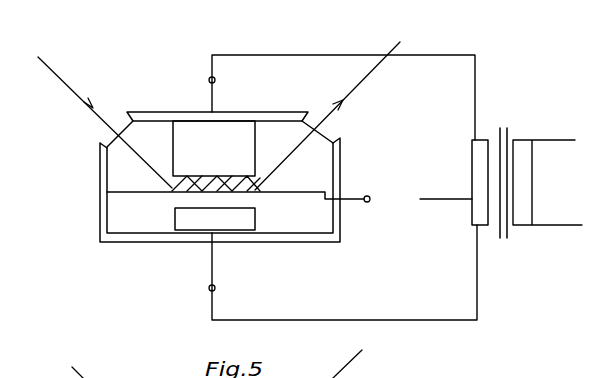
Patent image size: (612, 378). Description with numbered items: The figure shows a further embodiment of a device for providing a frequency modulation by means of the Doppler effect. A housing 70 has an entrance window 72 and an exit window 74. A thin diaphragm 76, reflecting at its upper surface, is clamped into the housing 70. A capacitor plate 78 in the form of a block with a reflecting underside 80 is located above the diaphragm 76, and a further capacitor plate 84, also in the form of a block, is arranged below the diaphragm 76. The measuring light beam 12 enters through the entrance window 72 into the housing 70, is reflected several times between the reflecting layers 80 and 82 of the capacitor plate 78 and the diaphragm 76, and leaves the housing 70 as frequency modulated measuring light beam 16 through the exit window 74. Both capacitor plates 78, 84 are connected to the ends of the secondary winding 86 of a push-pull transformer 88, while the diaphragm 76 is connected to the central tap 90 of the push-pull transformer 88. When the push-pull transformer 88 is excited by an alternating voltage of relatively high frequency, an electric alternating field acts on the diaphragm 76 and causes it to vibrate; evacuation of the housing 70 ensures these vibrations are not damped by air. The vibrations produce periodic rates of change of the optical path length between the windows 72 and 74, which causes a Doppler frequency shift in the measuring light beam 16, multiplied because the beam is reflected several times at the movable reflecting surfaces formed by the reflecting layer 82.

The measuring light beam 12 is at (62, 79).
The frequency modulated measuring light beam 16 is at (364, 72).
The housing 70 is at (157, 119).
The entrance window 72 is at (121, 130).
The exit window 74 is at (313, 137).
The diaphragm 76 is at (283, 193).
The capacitor plate 78 is at (238, 135).
The reflecting underside 80 is at (197, 190).
The reflecting layer 82 is at (248, 191).
The further capacitor plate 84 is at (183, 223).
The secondary winding 86 is at (480, 157).
The push-pull transformer 88 is at (503, 118).
The central tap 90 is at (470, 199).